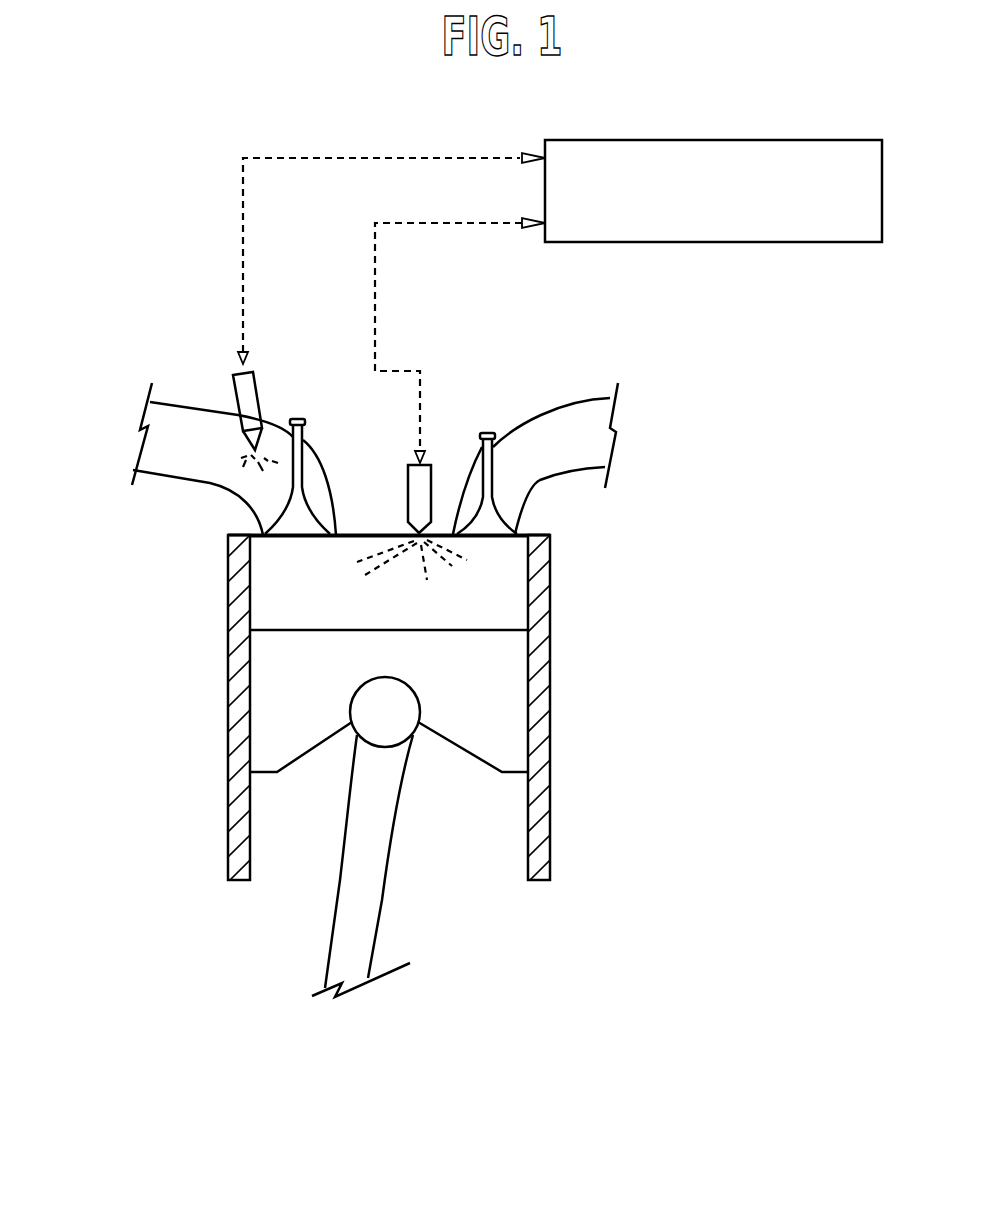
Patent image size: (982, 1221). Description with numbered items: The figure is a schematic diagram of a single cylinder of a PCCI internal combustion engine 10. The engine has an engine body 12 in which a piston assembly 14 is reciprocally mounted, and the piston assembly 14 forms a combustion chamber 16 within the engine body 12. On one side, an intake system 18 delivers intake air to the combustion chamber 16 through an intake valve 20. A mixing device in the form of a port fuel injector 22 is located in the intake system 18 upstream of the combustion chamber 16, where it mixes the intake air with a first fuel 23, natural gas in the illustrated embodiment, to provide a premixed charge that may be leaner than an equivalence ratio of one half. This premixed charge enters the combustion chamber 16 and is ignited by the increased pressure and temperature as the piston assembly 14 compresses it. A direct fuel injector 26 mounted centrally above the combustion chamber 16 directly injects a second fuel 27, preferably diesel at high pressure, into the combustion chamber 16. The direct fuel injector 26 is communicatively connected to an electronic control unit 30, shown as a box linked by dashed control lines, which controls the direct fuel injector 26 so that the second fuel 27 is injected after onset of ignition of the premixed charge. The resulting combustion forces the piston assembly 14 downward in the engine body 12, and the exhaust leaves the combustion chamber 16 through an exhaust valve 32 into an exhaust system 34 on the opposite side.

The internal combustion engine 10 is at (164, 259).
The engine body 12 is at (238, 606).
The piston assembly 14 is at (497, 713).
The combustion chamber 16 is at (503, 613).
The intake system 18 is at (193, 480).
The intake valve 20 is at (304, 421).
The port fuel injector 22 is at (233, 390).
The first fuel 23 is at (255, 455).
The direct fuel injector 26 is at (433, 483).
The second fuel 27 is at (450, 565).
The electronic control unit 30 is at (800, 140).
The exhaust valve 32 is at (493, 437).
The exhaust system 34 is at (548, 485).